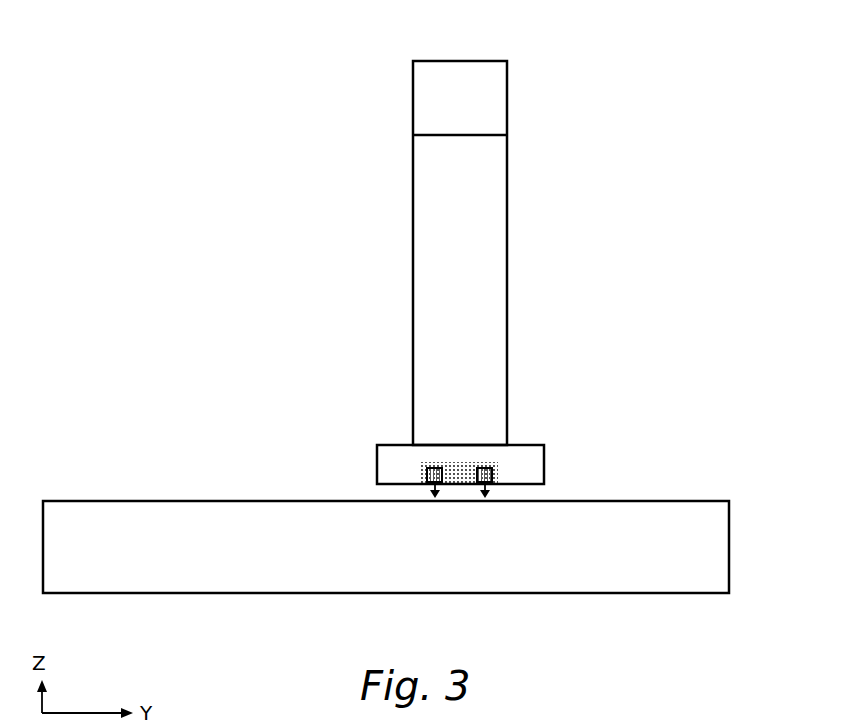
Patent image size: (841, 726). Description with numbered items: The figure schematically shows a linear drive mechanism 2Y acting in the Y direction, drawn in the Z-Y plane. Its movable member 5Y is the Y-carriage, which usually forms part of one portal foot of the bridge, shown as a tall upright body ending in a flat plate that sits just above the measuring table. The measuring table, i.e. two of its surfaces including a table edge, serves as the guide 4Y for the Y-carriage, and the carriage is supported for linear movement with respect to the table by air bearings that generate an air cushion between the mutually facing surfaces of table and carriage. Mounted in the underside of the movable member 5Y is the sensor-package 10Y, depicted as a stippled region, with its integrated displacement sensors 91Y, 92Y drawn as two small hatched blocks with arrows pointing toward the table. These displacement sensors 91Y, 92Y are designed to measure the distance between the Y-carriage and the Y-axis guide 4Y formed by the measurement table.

The linear drive mechanism 2Y is at (551, 274).
The guide 4Y is at (386, 528).
The movable member 5Y is at (496, 448).
The sensor-package 10Y is at (387, 370).
The displacement sensor 91Y is at (534, 420).
The displacement sensor 92Y is at (359, 435).